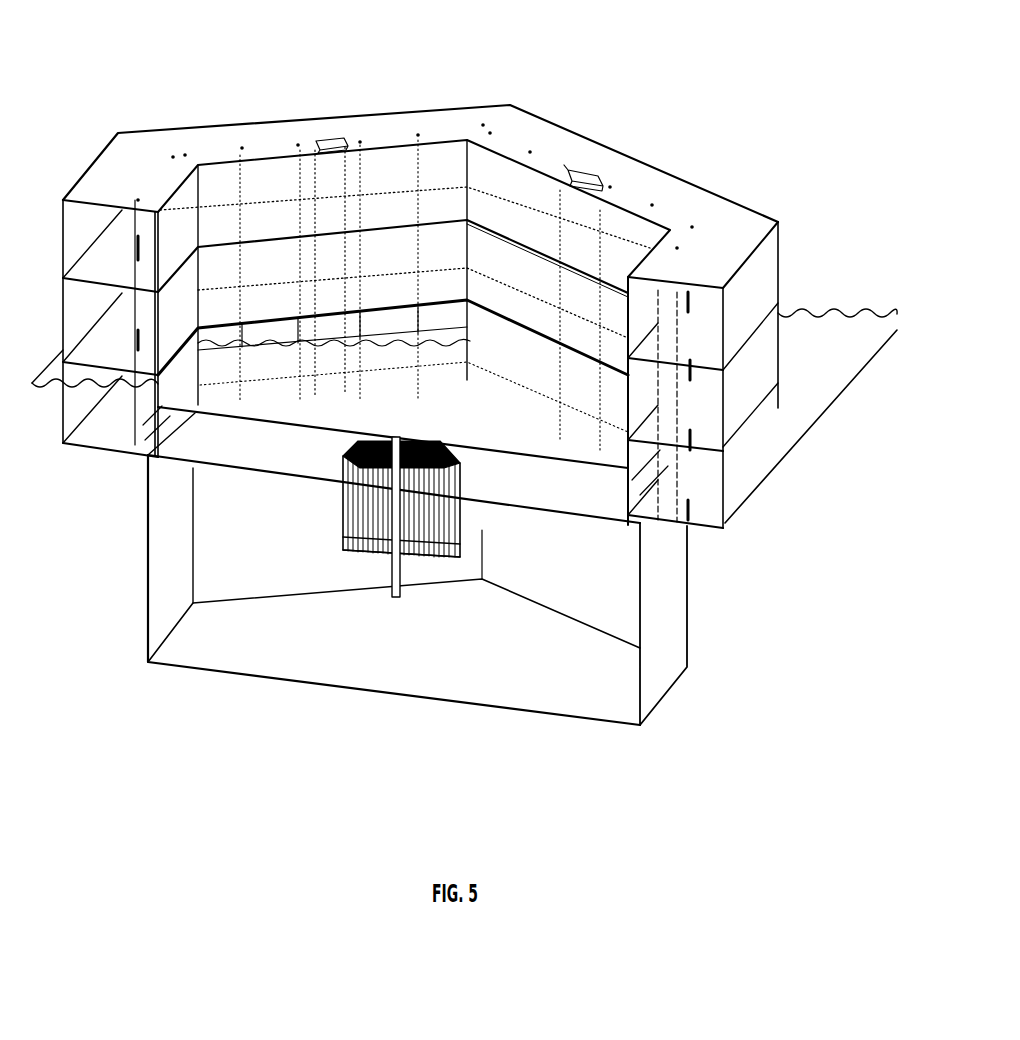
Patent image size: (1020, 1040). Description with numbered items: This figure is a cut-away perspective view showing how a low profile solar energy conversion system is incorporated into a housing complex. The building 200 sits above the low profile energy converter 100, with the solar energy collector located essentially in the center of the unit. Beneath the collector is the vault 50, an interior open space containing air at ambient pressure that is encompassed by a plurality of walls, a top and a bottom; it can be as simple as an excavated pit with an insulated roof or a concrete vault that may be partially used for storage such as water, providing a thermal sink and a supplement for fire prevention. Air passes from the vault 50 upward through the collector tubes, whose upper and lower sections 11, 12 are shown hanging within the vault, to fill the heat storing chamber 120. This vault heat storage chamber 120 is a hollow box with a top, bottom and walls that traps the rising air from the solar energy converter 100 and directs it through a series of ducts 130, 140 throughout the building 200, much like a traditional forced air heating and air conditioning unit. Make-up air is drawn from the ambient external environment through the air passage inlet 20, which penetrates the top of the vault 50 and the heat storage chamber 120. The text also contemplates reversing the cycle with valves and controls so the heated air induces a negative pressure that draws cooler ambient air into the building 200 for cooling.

The building 200 is at (420, 293).
The duct 140 is at (137, 233).
The duct 130 is at (697, 522).
The heat storing chamber 120 is at (213, 438).
The low profile energy converter 100 is at (440, 623).
The vault 50 is at (662, 636).
The collector tube upper top section 11 is at (352, 620).
The collector tube lower bottom section 12 is at (352, 518).
The air passage inlet 20 is at (392, 585).